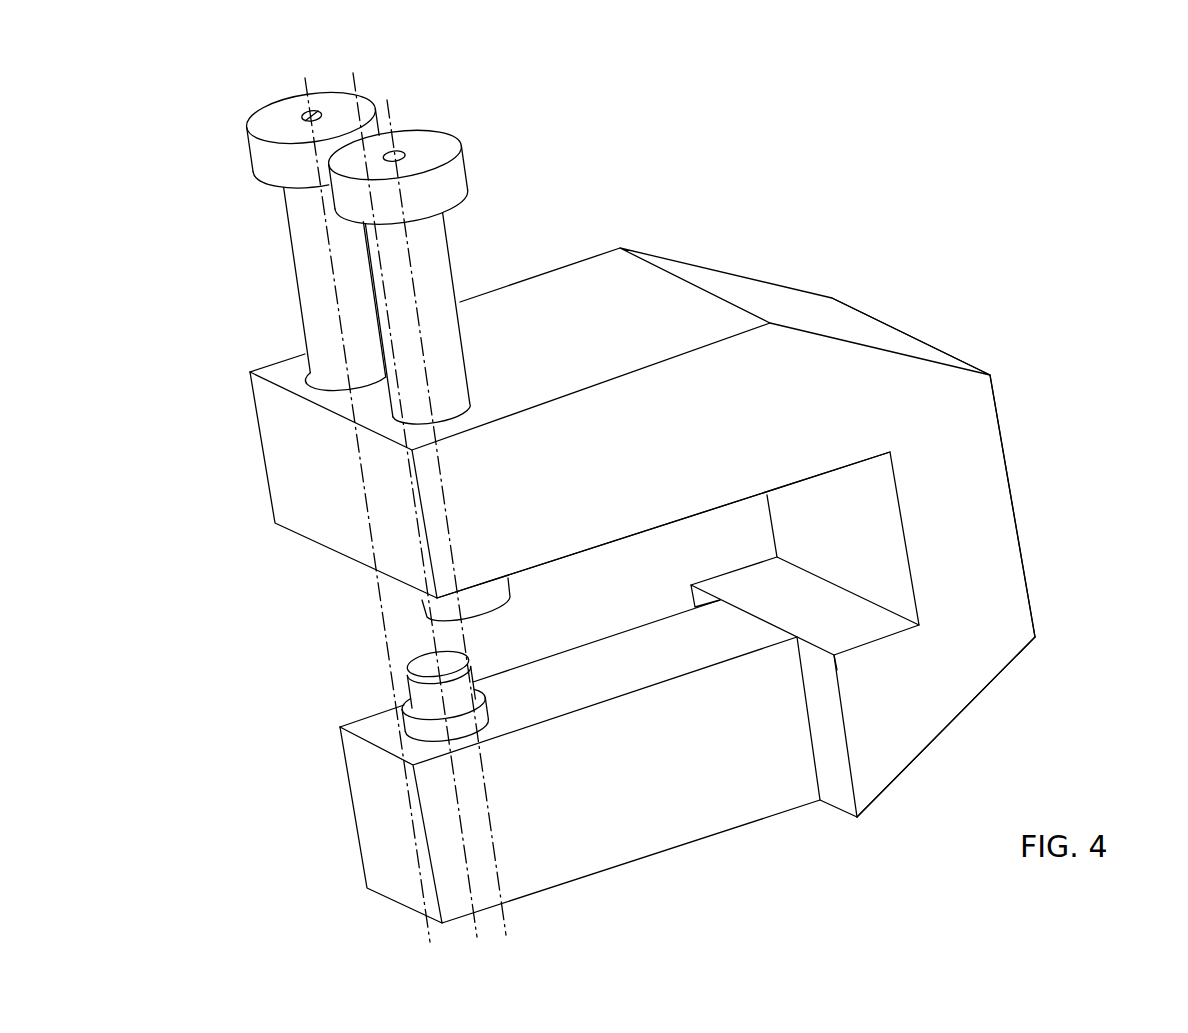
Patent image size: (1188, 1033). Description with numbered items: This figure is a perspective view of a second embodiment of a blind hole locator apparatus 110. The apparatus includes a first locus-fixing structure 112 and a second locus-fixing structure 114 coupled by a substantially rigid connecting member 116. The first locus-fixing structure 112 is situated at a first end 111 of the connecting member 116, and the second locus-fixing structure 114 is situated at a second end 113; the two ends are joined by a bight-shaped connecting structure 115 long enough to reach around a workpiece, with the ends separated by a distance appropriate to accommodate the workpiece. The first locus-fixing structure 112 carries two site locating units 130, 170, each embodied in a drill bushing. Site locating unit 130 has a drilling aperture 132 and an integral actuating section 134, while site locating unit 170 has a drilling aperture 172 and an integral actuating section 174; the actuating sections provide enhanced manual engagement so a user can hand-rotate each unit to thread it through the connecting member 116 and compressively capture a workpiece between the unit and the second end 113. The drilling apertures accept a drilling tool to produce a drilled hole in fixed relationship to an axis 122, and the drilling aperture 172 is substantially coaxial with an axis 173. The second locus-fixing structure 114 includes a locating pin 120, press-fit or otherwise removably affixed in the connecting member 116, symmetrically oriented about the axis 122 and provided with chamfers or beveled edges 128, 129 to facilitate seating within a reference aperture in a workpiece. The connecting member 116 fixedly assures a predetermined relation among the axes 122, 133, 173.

The blind hole locator apparatus 110 is at (1111, 687).
The first end 111 is at (281, 511).
The first locus-fixing structure 112 is at (497, 423).
The second end 113 is at (375, 857).
The second locus-fixing structure 114 is at (508, 761).
The bight-shaped connecting structure 115 is at (1016, 516).
The connecting member 116 is at (963, 712).
The locating pin 120 is at (469, 681).
The axis 122 is at (477, 924).
The chamfer 128 is at (466, 661).
The chamfer 129 is at (489, 696).
The site locating unit 130 is at (438, 368).
The drilling aperture 132 is at (410, 152).
The axis 133 is at (392, 97).
The integral actuating section 134 is at (424, 173).
The site locating unit 170 is at (294, 238).
The drilling aperture 172 is at (300, 115).
The axis 173 is at (304, 86).
The integral actuating section 174 is at (280, 136).